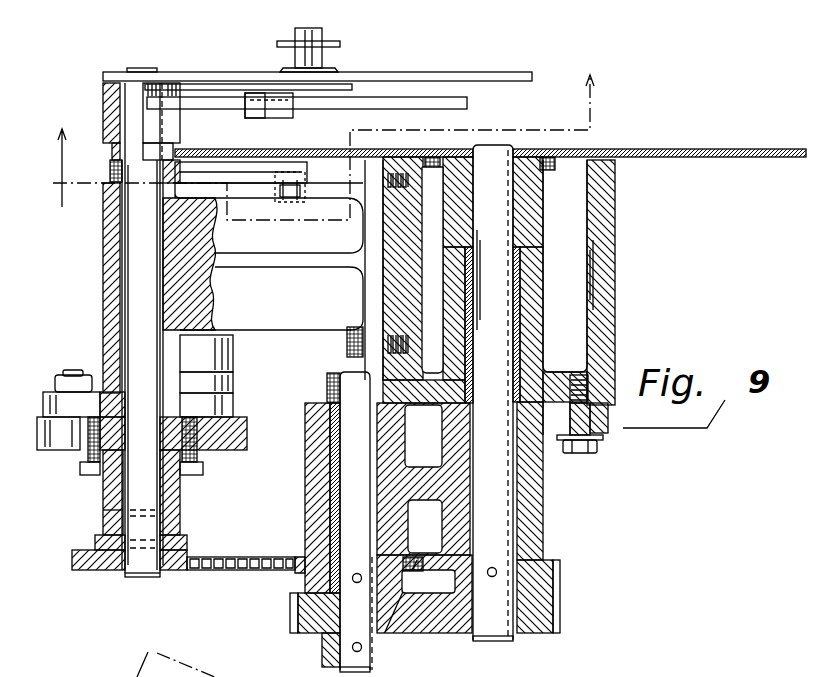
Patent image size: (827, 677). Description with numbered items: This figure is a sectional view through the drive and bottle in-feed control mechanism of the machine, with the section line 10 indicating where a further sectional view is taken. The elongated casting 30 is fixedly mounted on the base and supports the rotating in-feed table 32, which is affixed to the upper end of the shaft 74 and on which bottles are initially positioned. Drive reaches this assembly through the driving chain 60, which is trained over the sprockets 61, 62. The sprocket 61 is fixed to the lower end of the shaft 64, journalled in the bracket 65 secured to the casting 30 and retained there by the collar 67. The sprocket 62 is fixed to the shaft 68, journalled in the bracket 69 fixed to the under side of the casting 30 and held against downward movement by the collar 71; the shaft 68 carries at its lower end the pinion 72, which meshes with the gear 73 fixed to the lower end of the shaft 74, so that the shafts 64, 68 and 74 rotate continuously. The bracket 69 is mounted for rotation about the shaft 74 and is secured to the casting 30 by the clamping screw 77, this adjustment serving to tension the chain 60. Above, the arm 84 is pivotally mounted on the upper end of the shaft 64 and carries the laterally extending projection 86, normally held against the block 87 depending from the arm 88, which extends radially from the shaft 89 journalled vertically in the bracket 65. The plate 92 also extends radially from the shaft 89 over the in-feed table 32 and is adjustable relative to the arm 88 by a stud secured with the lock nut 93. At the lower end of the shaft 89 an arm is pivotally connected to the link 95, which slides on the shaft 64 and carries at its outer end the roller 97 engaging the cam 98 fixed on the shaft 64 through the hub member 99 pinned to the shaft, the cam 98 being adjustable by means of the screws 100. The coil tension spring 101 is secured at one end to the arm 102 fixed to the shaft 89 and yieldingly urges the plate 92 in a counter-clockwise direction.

The section line 10- 10 is at (328, 137).
The elongated casting 30 is at (615, 211).
The in-feed table 32 is at (603, 149).
The driving chain 60 is at (238, 558).
The sprocket 61 is at (100, 541).
The sprocket 62 is at (400, 576).
The shaft 64 is at (153, 573).
The bearing bracket 65 is at (272, 297).
The collar 67 is at (110, 176).
The shaft 68 is at (332, 522).
The bracket 69 is at (305, 484).
The collar 71 is at (327, 383).
The pinion 72 is at (404, 633).
The gear 73 is at (540, 634).
The shaft 74 is at (493, 393).
The clamping screw 77 is at (583, 453).
The arm 84 is at (422, 109).
The laterally extending projection 86 is at (298, 118).
The block 87 is at (267, 118).
The arm 88 is at (352, 88).
The shaft 89 is at (138, 71).
The plate 92 is at (452, 76).
The lock nut 93 is at (328, 38).
The link 95 is at (100, 392).
The roller 97 is at (37, 441).
The cam 98 is at (226, 447).
The hub member 99 is at (180, 497).
The screws 100 is at (100, 472).
The coil tension spring 101 is at (303, 190).
The arm 102 is at (307, 172).